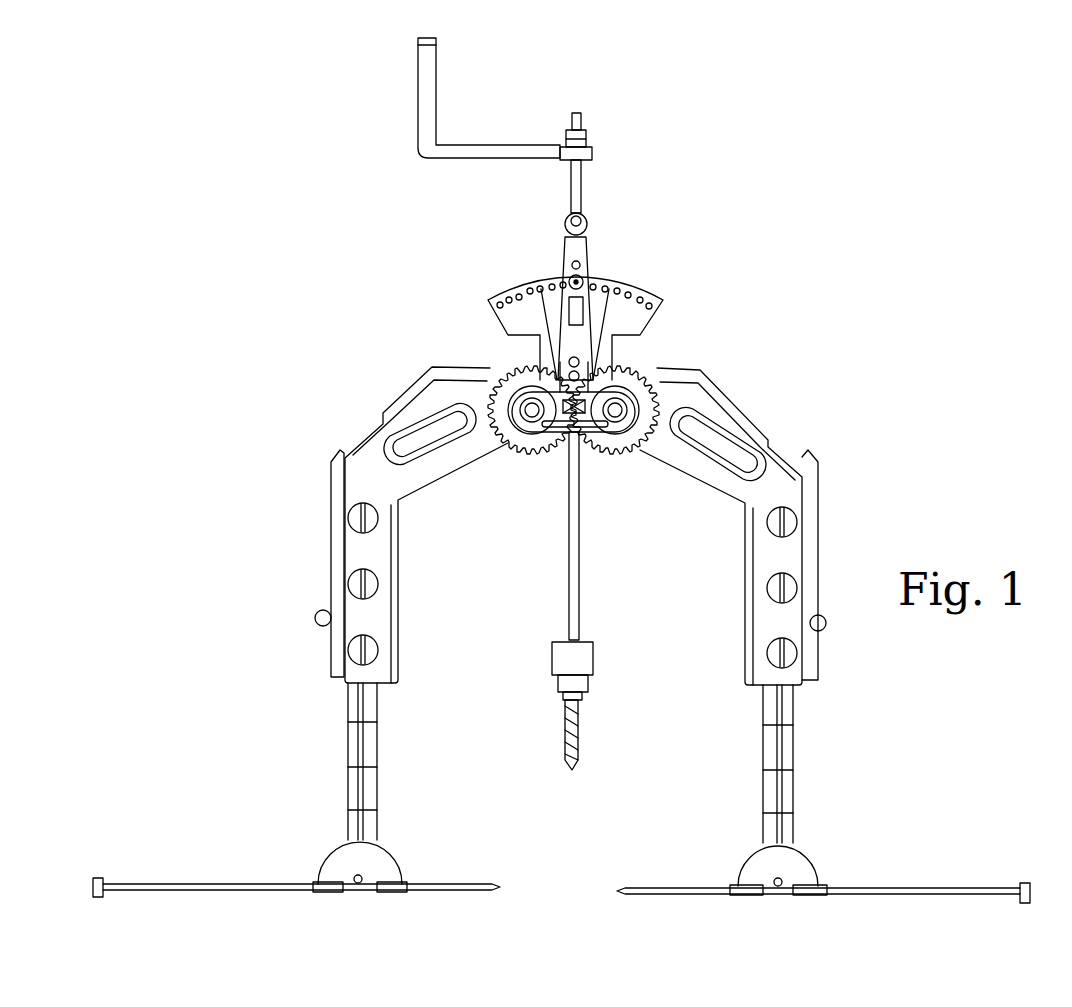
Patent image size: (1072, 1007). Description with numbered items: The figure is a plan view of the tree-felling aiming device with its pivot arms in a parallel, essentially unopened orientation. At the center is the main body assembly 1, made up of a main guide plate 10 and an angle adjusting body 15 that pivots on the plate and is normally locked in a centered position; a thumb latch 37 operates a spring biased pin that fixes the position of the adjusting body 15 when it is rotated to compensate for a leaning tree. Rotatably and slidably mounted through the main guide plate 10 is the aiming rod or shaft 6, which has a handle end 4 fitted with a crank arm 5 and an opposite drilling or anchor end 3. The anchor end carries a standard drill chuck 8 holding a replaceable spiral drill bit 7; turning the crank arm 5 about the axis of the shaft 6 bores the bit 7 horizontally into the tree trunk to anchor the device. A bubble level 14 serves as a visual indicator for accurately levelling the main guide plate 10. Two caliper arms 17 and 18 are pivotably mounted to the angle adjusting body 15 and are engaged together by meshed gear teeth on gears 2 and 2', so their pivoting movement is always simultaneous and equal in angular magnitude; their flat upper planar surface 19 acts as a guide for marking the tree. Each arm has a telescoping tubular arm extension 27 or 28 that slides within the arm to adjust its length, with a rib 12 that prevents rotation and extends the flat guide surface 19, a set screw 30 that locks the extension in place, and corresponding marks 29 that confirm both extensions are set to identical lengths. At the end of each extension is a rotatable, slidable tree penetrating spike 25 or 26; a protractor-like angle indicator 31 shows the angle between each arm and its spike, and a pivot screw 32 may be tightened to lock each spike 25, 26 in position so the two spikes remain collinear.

The main body assembly 1 is at (658, 331).
The gear 2 is at (519, 391).
The gear 2' is at (617, 396).
The drilling or anchor end 3 is at (597, 692).
The handle end 4 is at (607, 147).
The crank arm 5 is at (427, 79).
The aiming rod or shaft 6 is at (577, 195).
The spiral drill bit 7 is at (568, 715).
The drill chuck 8 is at (565, 662).
The main guide plate 10 is at (617, 305).
The rib 12 is at (363, 703).
The bubble level 14 is at (553, 443).
The angle adjusting body 15 is at (573, 272).
The caliper arm 17 is at (347, 553).
The caliper arm 18 is at (796, 548).
The flat upper planar surface 19 is at (378, 607).
The tree penetrating spike 25 is at (279, 882).
The tree penetrating spike 26 is at (903, 888).
The telescoping tubular arm extension 27 is at (357, 758).
The telescoping tubular arm extension 28 is at (770, 750).
The marks 29 is at (375, 805).
The set screw 30 is at (315, 618).
The angle indicator 31 is at (374, 858).
The pivot screw 32 is at (363, 877).
The thumb latch 37 is at (602, 210).